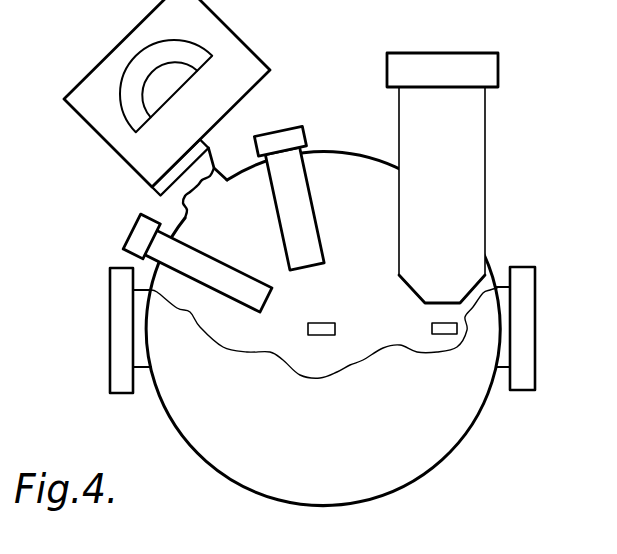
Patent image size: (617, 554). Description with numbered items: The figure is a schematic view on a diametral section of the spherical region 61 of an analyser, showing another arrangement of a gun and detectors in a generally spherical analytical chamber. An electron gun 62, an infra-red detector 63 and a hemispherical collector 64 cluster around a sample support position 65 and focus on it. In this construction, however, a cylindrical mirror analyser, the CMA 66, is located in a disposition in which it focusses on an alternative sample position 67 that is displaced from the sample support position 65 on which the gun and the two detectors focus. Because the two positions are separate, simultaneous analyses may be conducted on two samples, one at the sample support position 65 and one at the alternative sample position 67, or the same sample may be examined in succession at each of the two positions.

The spherical region 61 is at (437, 432).
The electron gun 62 is at (242, 283).
The infra-red detector 63 is at (307, 227).
The hemispherical collector 64 is at (257, 70).
The sample support position 65 is at (327, 335).
The CMA 66 is at (475, 211).
The alternative sample position 67 is at (447, 333).